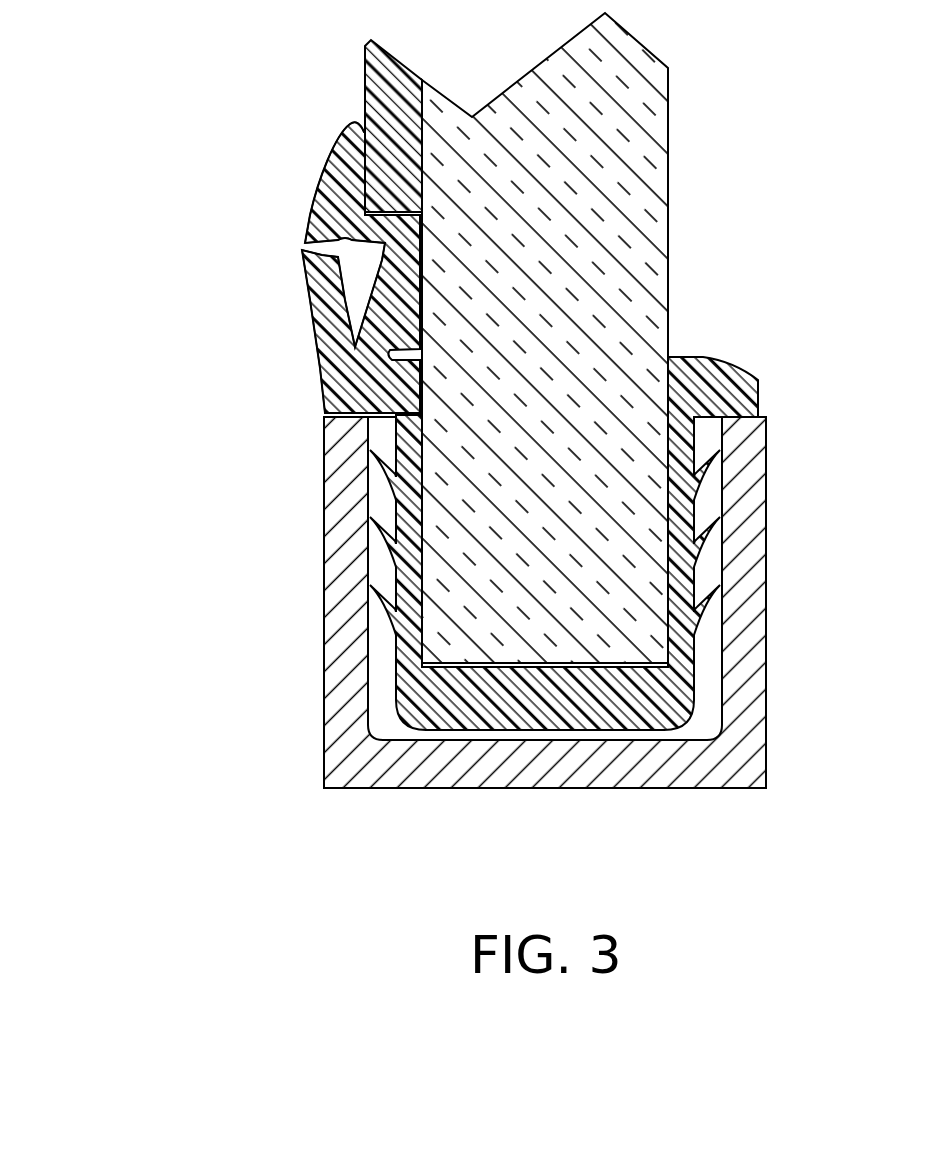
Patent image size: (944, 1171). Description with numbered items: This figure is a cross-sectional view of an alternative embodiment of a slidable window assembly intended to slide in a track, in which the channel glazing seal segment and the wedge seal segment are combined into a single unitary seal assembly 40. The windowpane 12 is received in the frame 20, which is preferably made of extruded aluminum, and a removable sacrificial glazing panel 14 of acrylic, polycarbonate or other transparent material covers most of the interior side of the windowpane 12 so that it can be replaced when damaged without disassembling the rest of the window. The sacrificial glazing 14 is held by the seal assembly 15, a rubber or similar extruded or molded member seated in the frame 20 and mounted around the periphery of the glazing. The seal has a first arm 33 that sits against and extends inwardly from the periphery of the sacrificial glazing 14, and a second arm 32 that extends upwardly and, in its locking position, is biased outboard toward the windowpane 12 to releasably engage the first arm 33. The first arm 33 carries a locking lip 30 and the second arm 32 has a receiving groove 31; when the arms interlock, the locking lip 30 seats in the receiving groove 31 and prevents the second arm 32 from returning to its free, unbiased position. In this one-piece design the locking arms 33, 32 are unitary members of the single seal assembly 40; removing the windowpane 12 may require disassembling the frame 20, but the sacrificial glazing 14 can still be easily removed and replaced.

The windowpane 12 is at (640, 43).
The sacrificial glazing panel 14 is at (370, 42).
The seal assembly 15 is at (205, 427).
The frame 20 is at (768, 647).
The locking lip 30 is at (303, 233).
The receiving groove 31 is at (302, 262).
The second arm 32 is at (310, 332).
The first arm 33 is at (315, 185).
The unitary seal assembly 40 is at (700, 357).